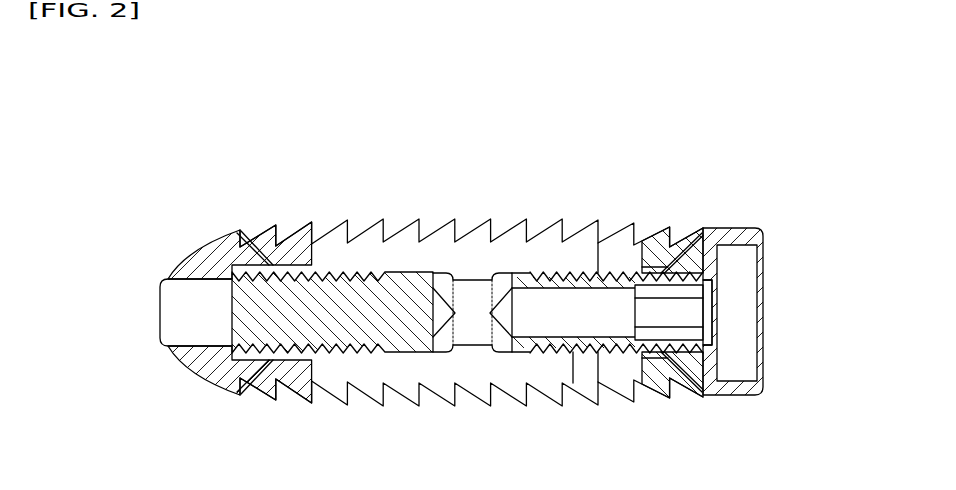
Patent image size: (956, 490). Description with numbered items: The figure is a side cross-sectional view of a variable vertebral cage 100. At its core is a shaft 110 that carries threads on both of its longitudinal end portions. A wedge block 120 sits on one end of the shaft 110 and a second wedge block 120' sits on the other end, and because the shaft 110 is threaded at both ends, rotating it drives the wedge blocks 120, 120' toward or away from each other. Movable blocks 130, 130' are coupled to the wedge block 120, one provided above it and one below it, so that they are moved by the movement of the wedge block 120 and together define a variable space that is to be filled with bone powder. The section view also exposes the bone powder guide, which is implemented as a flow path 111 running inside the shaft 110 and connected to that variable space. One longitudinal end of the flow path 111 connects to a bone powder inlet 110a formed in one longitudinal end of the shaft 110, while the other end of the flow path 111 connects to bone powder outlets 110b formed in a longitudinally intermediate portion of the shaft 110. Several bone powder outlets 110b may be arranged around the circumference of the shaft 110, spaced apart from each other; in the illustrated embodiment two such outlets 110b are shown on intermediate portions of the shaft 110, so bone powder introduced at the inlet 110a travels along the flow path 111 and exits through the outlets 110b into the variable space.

The variable vertebral cage 100 is at (302, 96).
The shaft 110 is at (399, 296).
The bone powder inlet 110a is at (709, 311).
The bone powder outlets 110b is at (475, 276).
The flow path 111 is at (558, 302).
The wedge block 120 is at (236, 274).
The wedge block 120' is at (750, 264).
The movable block 130 is at (672, 204).
The movable block 130' is at (674, 420).